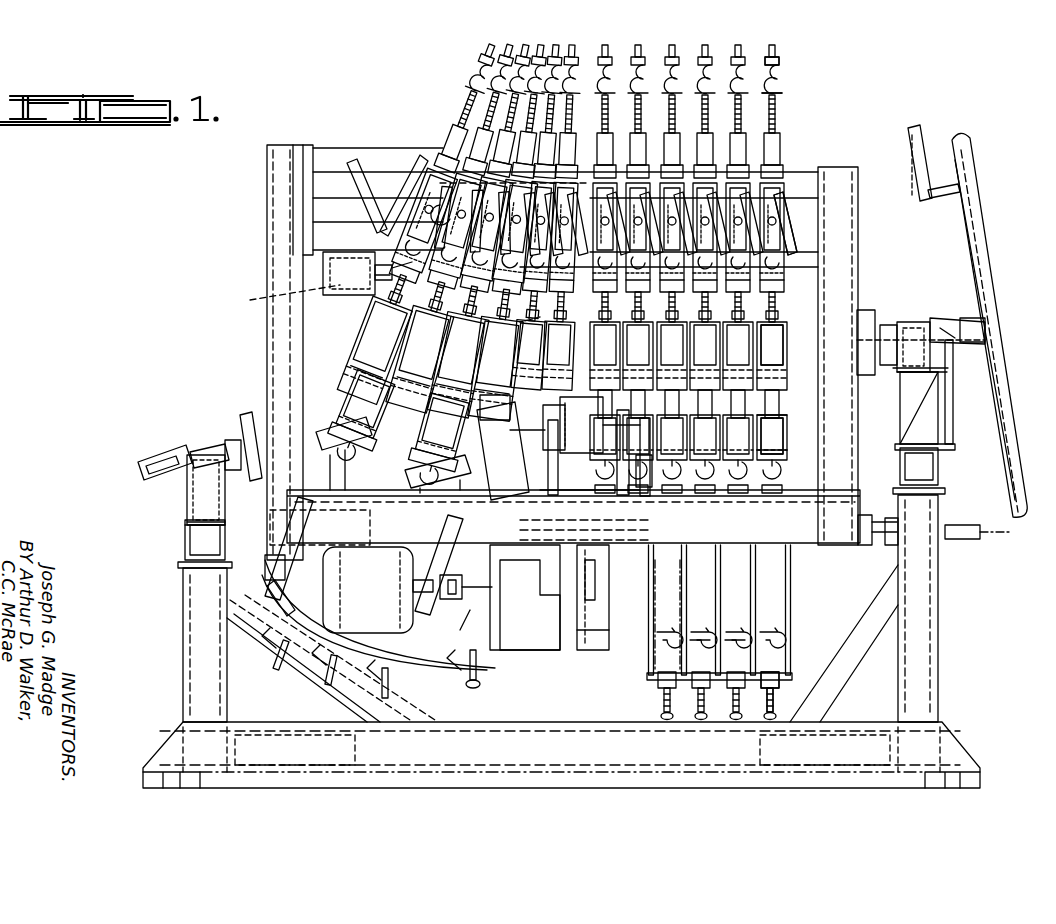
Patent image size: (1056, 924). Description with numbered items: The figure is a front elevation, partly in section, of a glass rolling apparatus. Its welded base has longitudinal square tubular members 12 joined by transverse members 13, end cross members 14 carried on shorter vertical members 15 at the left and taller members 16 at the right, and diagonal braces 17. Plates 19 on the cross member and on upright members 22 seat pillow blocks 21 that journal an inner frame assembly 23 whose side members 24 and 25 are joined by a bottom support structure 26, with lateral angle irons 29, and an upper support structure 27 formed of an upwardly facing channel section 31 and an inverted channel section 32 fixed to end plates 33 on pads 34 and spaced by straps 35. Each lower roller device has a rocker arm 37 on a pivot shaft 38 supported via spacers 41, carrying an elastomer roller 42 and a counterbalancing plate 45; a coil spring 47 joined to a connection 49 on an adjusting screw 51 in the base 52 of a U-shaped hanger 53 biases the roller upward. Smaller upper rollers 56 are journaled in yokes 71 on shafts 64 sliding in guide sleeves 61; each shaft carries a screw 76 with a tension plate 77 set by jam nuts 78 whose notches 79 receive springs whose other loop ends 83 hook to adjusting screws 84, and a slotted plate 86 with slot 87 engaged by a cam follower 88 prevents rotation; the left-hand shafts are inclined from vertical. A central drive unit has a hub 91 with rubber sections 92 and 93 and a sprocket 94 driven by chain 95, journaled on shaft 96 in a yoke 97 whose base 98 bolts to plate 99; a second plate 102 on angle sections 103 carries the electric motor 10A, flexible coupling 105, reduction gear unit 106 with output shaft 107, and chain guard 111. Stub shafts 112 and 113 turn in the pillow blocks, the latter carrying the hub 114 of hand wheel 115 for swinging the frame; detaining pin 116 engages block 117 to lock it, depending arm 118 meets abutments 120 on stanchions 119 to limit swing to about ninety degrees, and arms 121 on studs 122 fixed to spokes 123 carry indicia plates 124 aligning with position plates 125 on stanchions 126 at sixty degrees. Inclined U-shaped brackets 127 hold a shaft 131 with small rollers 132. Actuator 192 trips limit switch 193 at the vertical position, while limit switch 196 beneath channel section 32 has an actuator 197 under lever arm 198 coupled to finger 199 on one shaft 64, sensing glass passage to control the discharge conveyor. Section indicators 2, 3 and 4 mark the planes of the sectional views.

The motor 10A is at (392, 590).
The square tubular member 12 is at (561, 755).
The transversely extending square tubular member 13 is at (180, 732).
The cross member 14 is at (185, 543).
The square tubular member 15 is at (182, 645).
The square tubular member 16 is at (938, 615).
The diagonally extending square tubular member 17 is at (320, 675).
The plate 19 is at (188, 495).
The pillow block 21 is at (200, 455).
The upright member 22 is at (900, 428).
The inner frame assembly 23 is at (290, 104).
The side member 24 is at (271, 217).
The side member 25 is at (844, 243).
The bottom support structure 26 is at (741, 549).
The upper support structure 27 is at (358, 152).
The laterally extending angle iron member 29 is at (320, 492).
The upper channel section 31 is at (330, 150).
The lower channel section 32 is at (320, 250).
The end plate 33 is at (310, 217).
The pad 34 is at (298, 170).
The strap 35 is at (360, 179).
The rocker arm 37 is at (791, 410).
The pivot shaft 38 is at (790, 446).
The spacer 41 is at (320, 435).
The elastomer roller 42 is at (790, 421).
The metal plate 45 is at (792, 435).
The coil spring 47 is at (753, 494).
The connection 49 is at (778, 640).
The adjusting screw 51 is at (778, 688).
The base portion 52 is at (780, 671).
The U-shaped hanger 53 is at (778, 629).
The elastomer roller 56 is at (792, 345).
The guide sleeve 61 is at (624, 147).
The shaft 64 is at (623, 130).
The yoke 71 is at (790, 350).
The screw 76 is at (626, 100).
The tension plate 77 is at (629, 59).
The jam nut 78 is at (629, 55).
The notch 79 is at (629, 64).
The loop end 83 is at (795, 223).
The adjusting screw 84 is at (793, 303).
The slotted plate member 86 is at (604, 210).
The slot 87 is at (410, 177).
The cam follower 88 is at (435, 210).
The hub 91 is at (648, 422).
The rubber section 92 is at (560, 452).
The rubber section 93 is at (605, 488).
The sprocket 94 is at (600, 384).
The drive chain 95 is at (592, 568).
The shaft 96 is at (648, 460).
The yoke 97 is at (505, 432).
The base 98 is at (520, 515).
The plate 99 is at (533, 551).
The second plate 102 is at (465, 512).
The angle section 103 is at (373, 513).
The flexible coupling 105 is at (477, 621).
The reduction gear unit 106 is at (530, 628).
The output shaft 107 is at (597, 594).
The chain guard 111 is at (604, 628).
The stub shaft 112 is at (143, 460).
The stub shaft 113 is at (983, 327).
The hub 114 is at (938, 315).
The hand wheel 115 is at (987, 247).
The detaining pin 116 is at (965, 538).
The block 117 is at (868, 515).
The depending arm 118 is at (265, 565).
The stanchion 119 is at (200, 445).
The stop block 120 is at (240, 415).
The arm 121 is at (918, 168).
The support stud 122 is at (935, 215).
The spoke 123 is at (978, 205).
The indicia plate 124 is at (923, 128).
The position indicating plate 125 is at (958, 333).
The braced stanchion 126 is at (953, 438).
The U-shaped bracket 127 is at (550, 500).
The shaft 131 is at (623, 417).
The elastomer roller 132 is at (543, 408).
The actuator 192 is at (278, 594).
The limit switch 193 is at (242, 660).
The limit switch 196 is at (257, 302).
The actuator 197 is at (395, 287).
The lever arm 198 is at (407, 257).
The finger 199 is at (520, 325).
The section line 2 is at (40, 468).
The section line 3 is at (632, 38).
The section line 4 is at (520, 386).